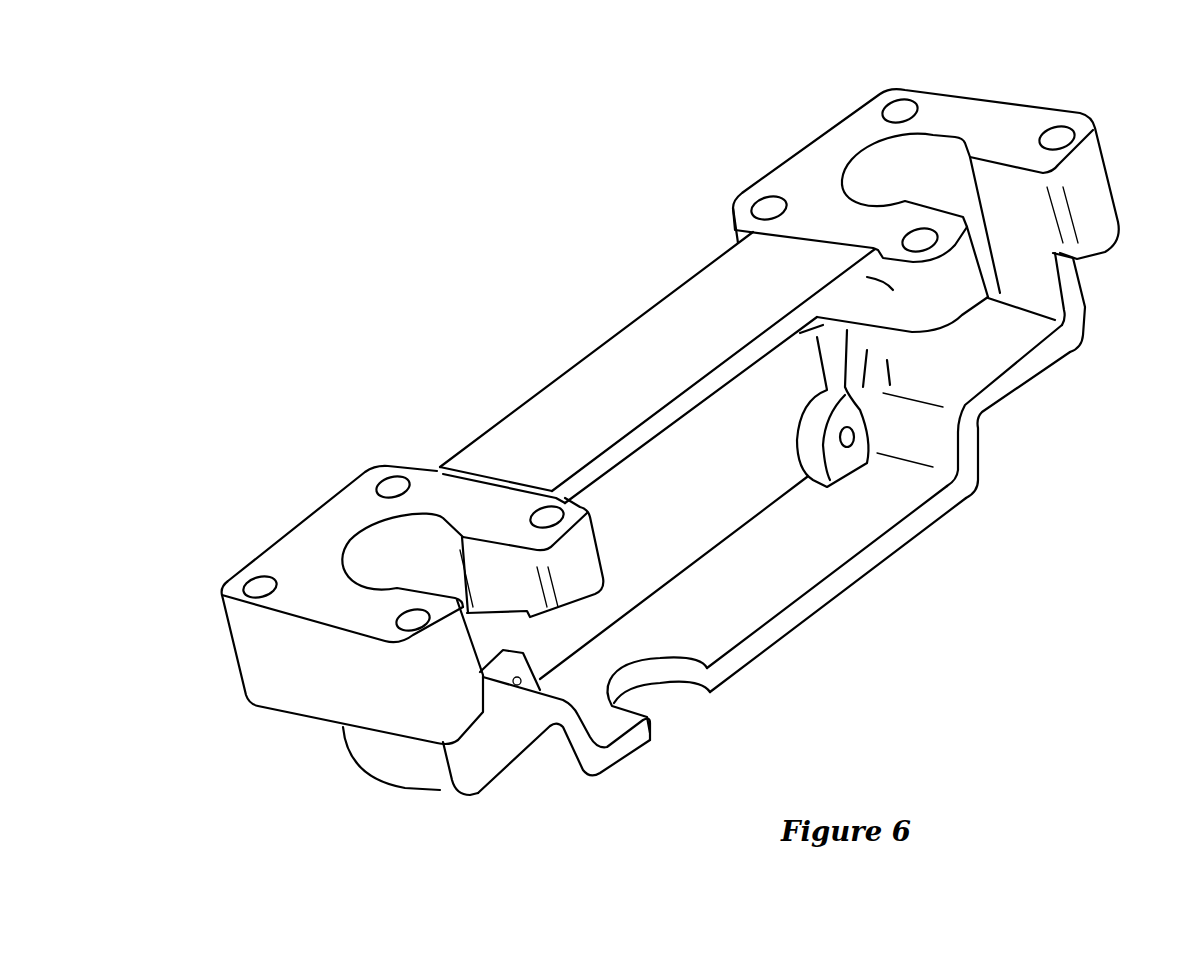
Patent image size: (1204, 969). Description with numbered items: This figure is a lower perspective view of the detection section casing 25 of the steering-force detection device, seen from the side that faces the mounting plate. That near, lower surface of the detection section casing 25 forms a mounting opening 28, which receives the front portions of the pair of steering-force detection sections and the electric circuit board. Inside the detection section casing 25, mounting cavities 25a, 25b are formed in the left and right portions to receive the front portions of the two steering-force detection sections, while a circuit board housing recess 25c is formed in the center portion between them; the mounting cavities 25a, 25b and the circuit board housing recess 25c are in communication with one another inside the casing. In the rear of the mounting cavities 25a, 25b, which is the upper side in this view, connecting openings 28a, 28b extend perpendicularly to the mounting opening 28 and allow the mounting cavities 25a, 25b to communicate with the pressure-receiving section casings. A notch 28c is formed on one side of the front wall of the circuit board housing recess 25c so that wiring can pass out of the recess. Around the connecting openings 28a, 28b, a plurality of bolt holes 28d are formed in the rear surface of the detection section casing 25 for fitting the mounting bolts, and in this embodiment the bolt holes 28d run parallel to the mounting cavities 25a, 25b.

The detection section casing 25 is at (597, 257).
The mounting cavity 25a is at (487, 742).
The mounting cavity 25b is at (1040, 279).
The circuit board housing recess 25c is at (858, 538).
The mounting opening 28 is at (940, 478).
The connecting opening 28a is at (419, 556).
The connecting opening 28b is at (962, 190).
The notch 28c is at (680, 680).
The bolt holes 28d is at (1055, 140).